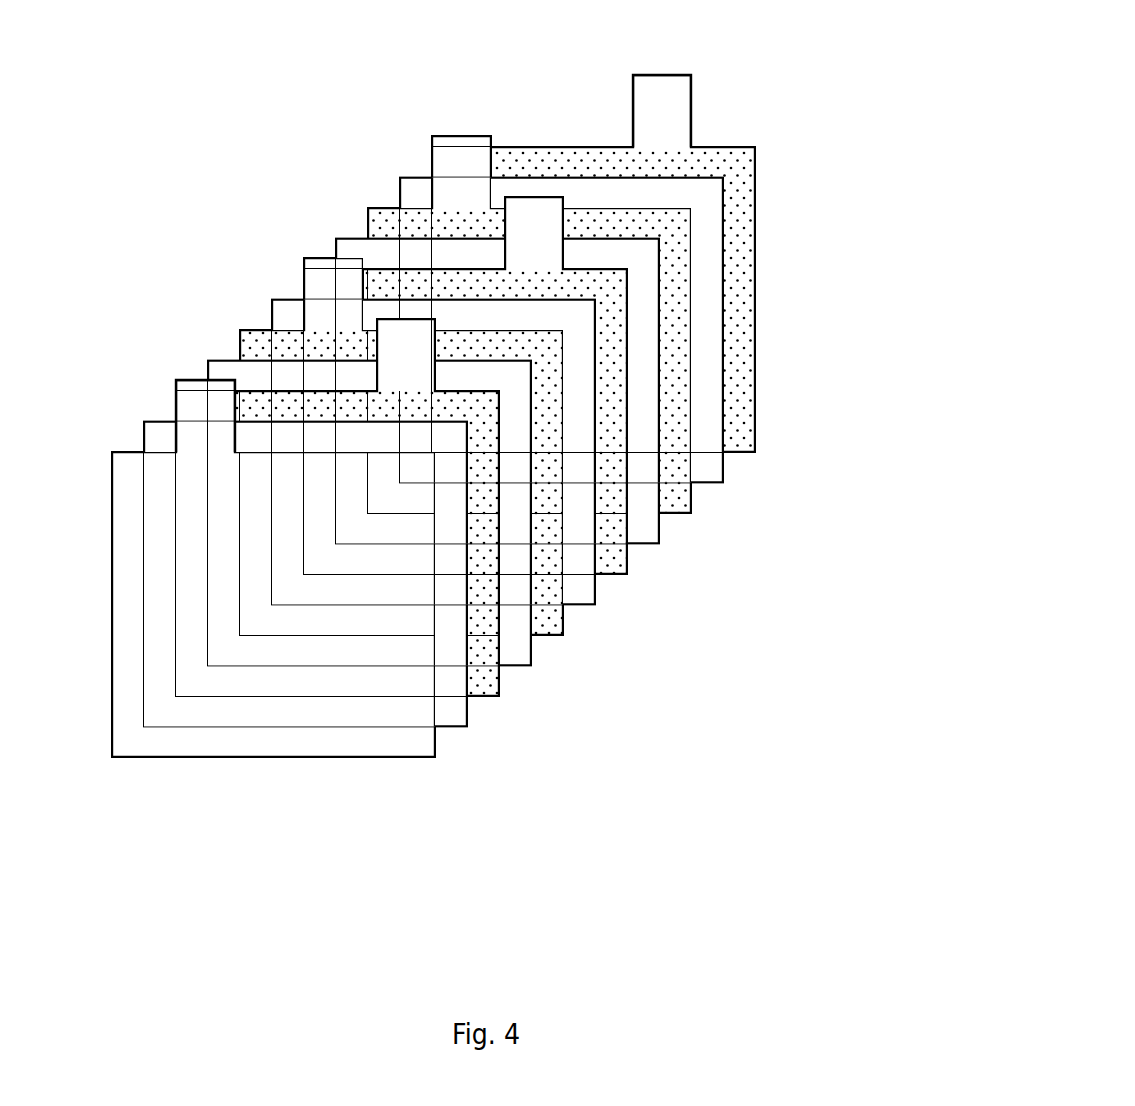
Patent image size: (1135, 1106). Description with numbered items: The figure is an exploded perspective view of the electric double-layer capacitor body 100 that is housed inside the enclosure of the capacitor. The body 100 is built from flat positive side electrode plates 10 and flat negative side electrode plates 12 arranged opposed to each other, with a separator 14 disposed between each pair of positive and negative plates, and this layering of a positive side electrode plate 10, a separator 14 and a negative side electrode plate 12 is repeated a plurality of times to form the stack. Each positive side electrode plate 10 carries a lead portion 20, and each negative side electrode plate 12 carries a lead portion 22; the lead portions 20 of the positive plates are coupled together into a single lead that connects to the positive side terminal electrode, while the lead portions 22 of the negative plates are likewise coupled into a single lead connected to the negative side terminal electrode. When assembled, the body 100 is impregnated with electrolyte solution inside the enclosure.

The positive side electrode plate 10 is at (123, 452).
The negative side electrode plate 12 is at (757, 173).
The separator 14 is at (452, 728).
The lead portion 20 is at (197, 393).
The lead portion 22 is at (676, 100).
The electric double-layer capacitor body 100 is at (790, 380).